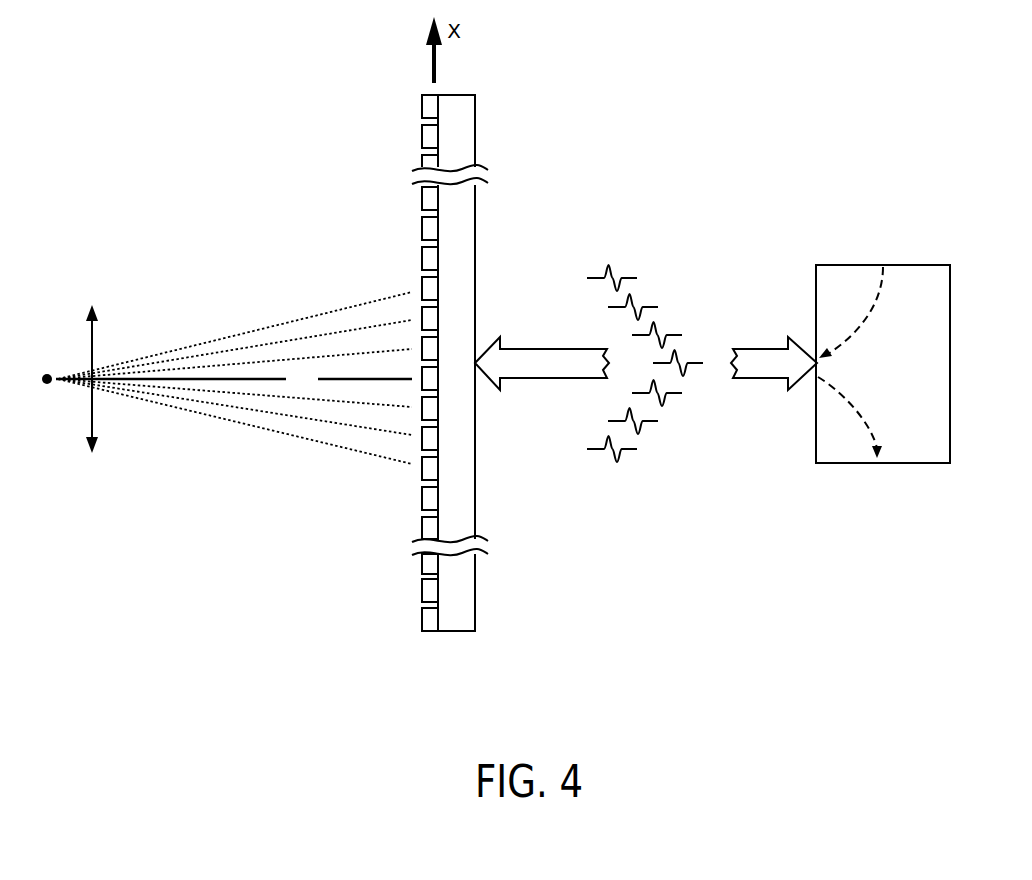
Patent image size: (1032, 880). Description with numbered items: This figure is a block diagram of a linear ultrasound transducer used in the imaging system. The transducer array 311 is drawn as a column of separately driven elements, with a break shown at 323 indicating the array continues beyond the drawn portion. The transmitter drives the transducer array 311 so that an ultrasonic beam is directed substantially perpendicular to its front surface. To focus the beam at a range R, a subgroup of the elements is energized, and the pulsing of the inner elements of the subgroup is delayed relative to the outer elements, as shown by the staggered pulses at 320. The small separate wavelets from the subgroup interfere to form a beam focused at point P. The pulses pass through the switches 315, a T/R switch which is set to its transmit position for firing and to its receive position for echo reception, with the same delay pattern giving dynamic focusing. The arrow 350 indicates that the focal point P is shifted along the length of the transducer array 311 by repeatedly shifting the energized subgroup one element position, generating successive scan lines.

The transducer array 323 is at (398, 172).
The transducer array 311 is at (420, 260).
The arrow 350 is at (92, 424).
The delayed pulsing 320 is at (634, 494).
The switches 315 is at (950, 444).